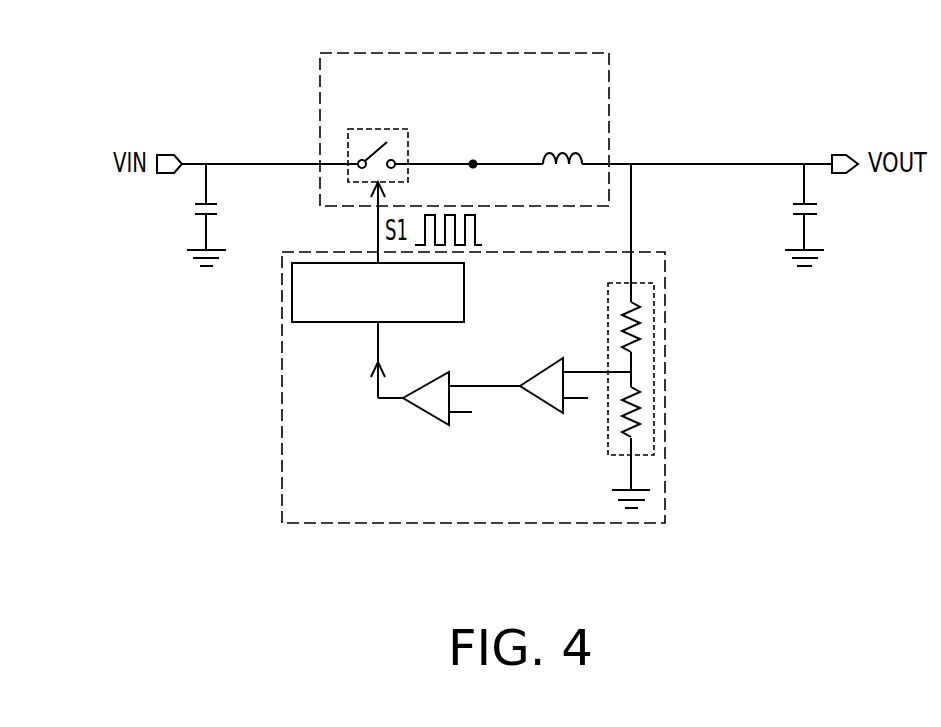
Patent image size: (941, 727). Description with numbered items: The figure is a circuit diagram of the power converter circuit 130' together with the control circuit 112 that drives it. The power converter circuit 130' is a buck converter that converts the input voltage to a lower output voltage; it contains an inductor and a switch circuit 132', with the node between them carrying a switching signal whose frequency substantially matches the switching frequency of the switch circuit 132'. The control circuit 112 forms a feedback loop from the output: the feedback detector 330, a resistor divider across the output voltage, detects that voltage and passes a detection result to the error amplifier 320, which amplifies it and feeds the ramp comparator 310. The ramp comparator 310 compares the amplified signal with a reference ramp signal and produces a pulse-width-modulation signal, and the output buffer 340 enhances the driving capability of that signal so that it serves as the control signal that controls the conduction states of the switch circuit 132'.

The power converter circuit 130' is at (513, 129).
The switch circuit 132' is at (378, 122).
The control circuit 112 is at (665, 385).
The output buffer 340 is at (464, 290).
The ramp comparator 310 is at (427, 413).
The error amplifier 320 is at (543, 401).
The feedback detector 330 is at (654, 285).